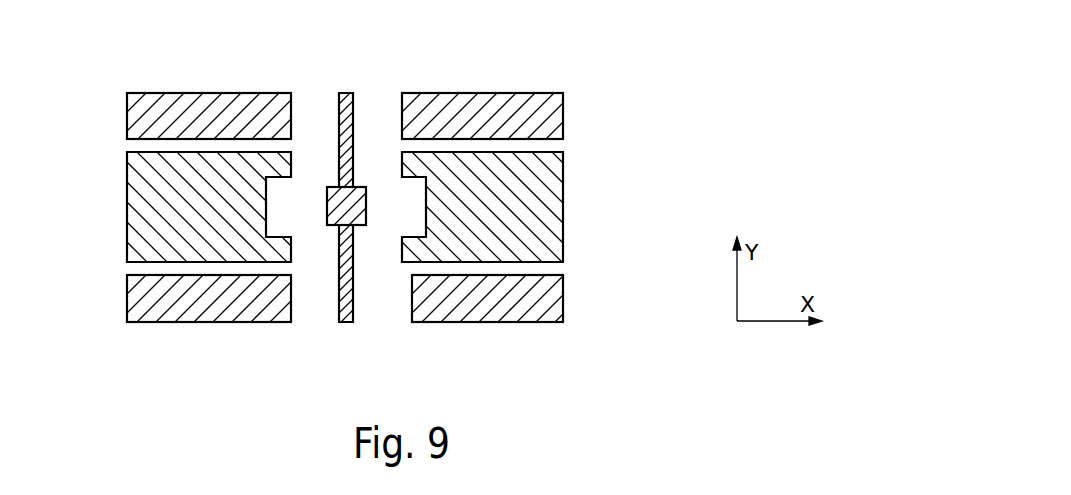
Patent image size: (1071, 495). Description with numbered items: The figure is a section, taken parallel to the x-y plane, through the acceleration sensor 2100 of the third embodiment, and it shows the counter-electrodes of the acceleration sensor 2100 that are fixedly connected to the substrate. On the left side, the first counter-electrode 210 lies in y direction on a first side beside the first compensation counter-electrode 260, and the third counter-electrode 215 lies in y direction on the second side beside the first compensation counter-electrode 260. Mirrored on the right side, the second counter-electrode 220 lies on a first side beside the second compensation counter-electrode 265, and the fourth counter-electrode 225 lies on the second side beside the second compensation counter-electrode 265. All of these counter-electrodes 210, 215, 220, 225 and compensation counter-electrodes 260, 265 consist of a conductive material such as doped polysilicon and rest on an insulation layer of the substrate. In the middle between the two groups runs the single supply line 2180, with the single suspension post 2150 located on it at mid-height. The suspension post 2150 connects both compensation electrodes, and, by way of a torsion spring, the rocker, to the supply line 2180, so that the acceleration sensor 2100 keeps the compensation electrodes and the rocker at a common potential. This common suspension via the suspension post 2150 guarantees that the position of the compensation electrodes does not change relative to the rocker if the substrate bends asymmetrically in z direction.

The first counter-electrode 210 is at (137, 113).
The third counter-electrode 215 is at (140, 297).
The second counter-electrode 220 is at (542, 117).
The fourth counter-electrode 225 is at (542, 300).
The first compensation counter-electrode 260 is at (150, 203).
The second compensation counter-electrode 265 is at (533, 204).
The supply line 2180 is at (352, 121).
The suspension post 2150 is at (327, 219).
The acceleration sensor 2100 is at (692, 32).